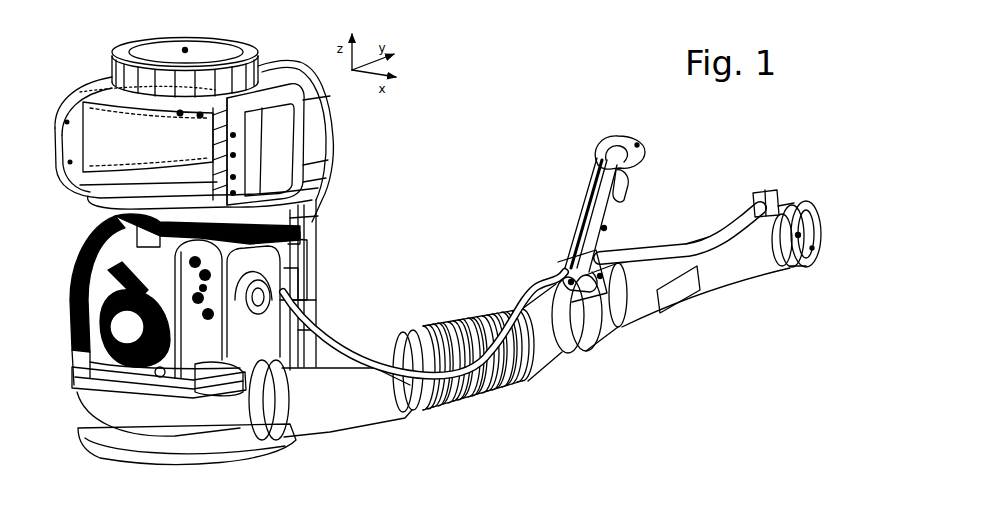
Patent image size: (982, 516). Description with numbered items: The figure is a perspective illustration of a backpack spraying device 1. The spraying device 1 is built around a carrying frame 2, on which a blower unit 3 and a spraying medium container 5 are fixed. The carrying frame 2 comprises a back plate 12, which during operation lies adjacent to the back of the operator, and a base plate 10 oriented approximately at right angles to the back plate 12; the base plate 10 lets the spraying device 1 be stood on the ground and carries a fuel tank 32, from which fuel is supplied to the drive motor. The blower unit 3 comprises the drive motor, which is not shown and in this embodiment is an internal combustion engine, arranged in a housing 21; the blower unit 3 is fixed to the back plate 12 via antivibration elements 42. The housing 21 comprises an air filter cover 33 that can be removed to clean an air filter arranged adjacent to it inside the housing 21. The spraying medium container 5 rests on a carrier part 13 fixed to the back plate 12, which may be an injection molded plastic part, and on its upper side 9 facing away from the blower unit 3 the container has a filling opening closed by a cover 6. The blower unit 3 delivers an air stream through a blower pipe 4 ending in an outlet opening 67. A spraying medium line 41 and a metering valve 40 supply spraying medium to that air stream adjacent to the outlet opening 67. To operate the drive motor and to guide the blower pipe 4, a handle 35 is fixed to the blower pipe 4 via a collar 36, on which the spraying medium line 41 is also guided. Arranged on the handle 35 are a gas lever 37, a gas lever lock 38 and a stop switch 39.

The spraying device 1 is at (500, 94).
The carrying frame 2 is at (346, 181).
The blower unit 3 is at (72, 250).
The blower pipe 4 is at (722, 279).
The spraying medium container 5 is at (313, 137).
The cover 6 is at (212, 48).
The upper side 9 is at (273, 90).
The base plate 10 is at (235, 455).
The back plate 12 is at (306, 311).
The carrier part 13 is at (312, 216).
The housing 21 is at (123, 248).
The fuel tank 32 is at (96, 410).
The air filter cover 33 is at (299, 282).
The handle 35 is at (607, 230).
The collar 36 is at (593, 331).
The gas lever 37 is at (625, 195).
The gas lever lock 38 is at (590, 186).
The stop switch 39 is at (596, 146).
The metering valve 40 is at (748, 195).
The spraying medium line 41 is at (530, 292).
The antivibration elements 42 is at (305, 238).
The outlet opening 67 is at (807, 200).